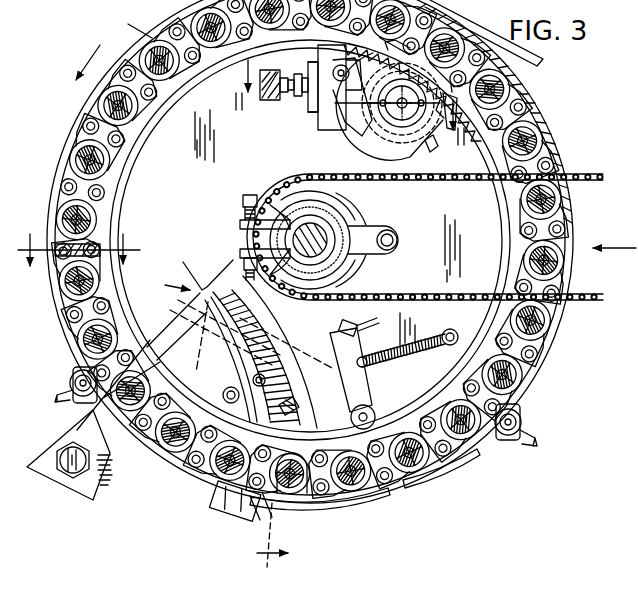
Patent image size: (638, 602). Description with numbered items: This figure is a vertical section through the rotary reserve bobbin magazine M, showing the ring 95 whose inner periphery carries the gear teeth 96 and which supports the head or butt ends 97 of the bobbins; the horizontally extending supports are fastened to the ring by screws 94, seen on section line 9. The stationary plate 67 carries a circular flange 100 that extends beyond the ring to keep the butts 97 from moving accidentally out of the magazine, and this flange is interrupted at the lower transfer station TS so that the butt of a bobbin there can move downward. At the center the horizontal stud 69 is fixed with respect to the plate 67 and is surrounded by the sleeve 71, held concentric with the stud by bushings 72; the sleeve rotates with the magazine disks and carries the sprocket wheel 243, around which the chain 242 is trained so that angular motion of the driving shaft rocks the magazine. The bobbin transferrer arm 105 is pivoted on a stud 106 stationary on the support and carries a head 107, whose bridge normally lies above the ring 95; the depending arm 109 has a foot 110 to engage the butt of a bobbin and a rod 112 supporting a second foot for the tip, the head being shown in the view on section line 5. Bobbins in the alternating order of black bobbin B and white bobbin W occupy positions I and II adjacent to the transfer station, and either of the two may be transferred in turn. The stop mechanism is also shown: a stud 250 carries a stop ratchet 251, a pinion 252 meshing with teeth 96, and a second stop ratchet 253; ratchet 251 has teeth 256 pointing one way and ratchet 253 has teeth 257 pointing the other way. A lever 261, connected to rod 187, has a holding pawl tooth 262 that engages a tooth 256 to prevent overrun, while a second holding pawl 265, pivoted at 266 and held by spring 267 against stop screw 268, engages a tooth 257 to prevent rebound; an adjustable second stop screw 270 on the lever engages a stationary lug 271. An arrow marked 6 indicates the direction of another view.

The plate 67 is at (140, 175).
The circular flange 100 is at (72, 133).
The gear teeth 96 is at (168, 100).
The screws 94 is at (62, 244).
The ring 95 is at (104, 285).
The head or butt ends 97 is at (512, 381).
The rod 187 is at (540, 64).
The chain 242 is at (590, 170).
The sprocket wheel 243 is at (372, 222).
The horizontal stud 69 is at (350, 256).
The sleeve 71 is at (322, 264).
The bushings 72 is at (288, 212).
The stop screw 268 is at (258, 82).
The stationary lug 271 is at (281, 96).
The second stop screw 270 is at (290, 102).
The pivot 266 is at (298, 98).
The spring 267 is at (306, 95).
The second holding pawl 265 is at (318, 112).
The lever 261 is at (320, 128).
The holding pawl tooth 262 is at (340, 132).
The stud 250 is at (382, 112).
The stop ratchet 251 is at (407, 132).
The pinion 252 is at (430, 146).
The stop ratchet 253 is at (392, 115).
The teeth 256 is at (403, 145).
The teeth 257 is at (434, 128).
The depending arm 109 is at (240, 316).
The head 107 is at (262, 378).
The rod 112 is at (292, 402).
The foot 110 is at (300, 424).
The bobbin transferrer arm 105 is at (123, 463).
The stud 106 is at (78, 470).
The white bobbin W is at (158, 448).
The position I is at (222, 480).
The position II is at (178, 450).
The black bobbin B is at (232, 506).
The transfer station TS is at (288, 500).
The section line 5- 5 is at (221, 429).
The section line 9- 9 is at (79, 238).
The view direction 6 is at (614, 238).
The reserve bobbin magazine M is at (114, 46).